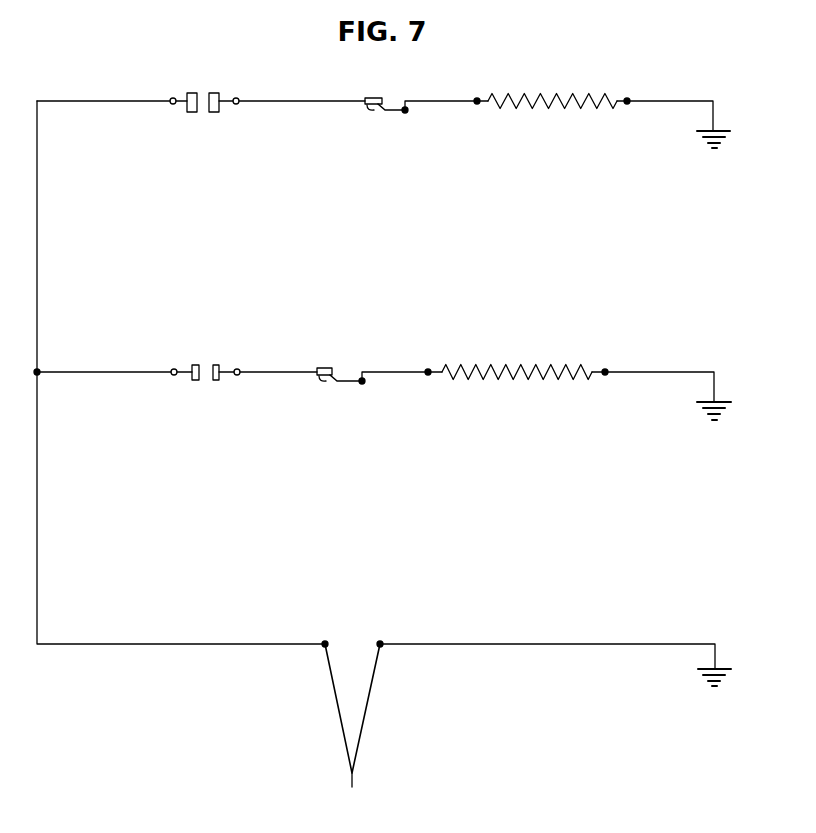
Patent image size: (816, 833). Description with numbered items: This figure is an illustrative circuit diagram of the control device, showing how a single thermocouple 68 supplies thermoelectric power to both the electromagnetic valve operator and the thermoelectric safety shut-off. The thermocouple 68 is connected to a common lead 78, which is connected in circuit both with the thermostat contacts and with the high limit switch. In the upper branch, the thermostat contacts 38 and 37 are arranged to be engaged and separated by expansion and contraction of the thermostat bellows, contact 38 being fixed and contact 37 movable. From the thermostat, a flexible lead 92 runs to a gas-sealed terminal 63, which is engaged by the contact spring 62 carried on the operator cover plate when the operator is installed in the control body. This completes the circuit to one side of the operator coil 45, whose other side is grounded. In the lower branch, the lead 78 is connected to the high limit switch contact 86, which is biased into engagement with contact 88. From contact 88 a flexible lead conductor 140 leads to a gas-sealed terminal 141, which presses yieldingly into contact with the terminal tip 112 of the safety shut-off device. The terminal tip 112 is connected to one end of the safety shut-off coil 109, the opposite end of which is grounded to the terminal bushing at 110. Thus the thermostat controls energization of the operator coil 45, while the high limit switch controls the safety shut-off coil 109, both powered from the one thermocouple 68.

The contact 37 is at (215, 93).
The contact 38 is at (192, 93).
The operator coil 45 is at (547, 95).
The contact spring 62 is at (387, 113).
The gas-sealed terminal 63 is at (373, 97).
The thermocouple 68 is at (333, 702).
The inwardly extending lead 78 is at (143, 647).
The contact 86 is at (195, 363).
The contact 88 is at (217, 363).
The flexible lead 92 is at (278, 103).
The coil 109 is at (498, 365).
The ground connection 110 is at (702, 413).
The terminal tip 112 is at (330, 382).
The flexible lead conductor 140 is at (262, 374).
The gas-sealed terminal 141 is at (320, 367).